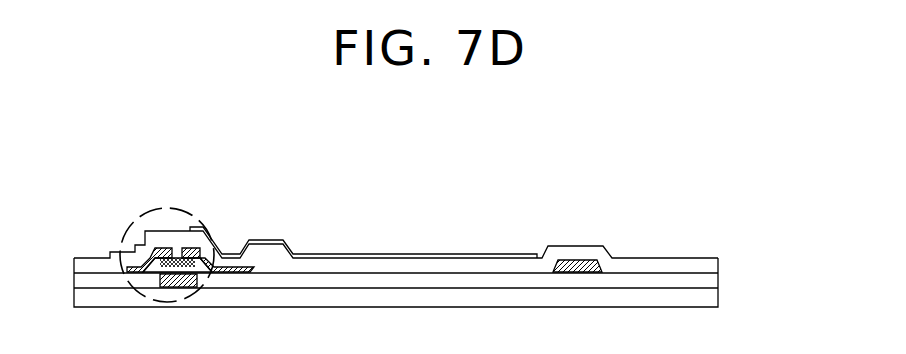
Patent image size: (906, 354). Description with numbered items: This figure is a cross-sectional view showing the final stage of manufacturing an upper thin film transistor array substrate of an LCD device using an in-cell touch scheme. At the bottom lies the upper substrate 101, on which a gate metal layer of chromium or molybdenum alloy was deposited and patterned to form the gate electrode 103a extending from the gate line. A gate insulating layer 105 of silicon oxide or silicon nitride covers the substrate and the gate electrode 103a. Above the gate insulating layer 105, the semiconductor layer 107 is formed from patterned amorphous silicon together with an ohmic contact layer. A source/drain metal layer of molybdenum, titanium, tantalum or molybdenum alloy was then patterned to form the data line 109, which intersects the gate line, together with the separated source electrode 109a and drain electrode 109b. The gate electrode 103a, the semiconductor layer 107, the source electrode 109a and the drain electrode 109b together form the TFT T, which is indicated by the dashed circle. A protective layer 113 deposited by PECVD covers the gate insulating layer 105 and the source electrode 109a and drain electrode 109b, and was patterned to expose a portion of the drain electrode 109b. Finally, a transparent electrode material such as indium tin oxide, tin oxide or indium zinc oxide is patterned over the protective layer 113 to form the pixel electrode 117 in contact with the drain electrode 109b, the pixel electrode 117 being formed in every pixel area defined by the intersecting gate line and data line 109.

The upper substrate 101 is at (713, 301).
The gate insulating layer 105 is at (713, 280).
The semiconductor layer 107 is at (197, 282).
The gate electrode 103a is at (173, 268).
The source electrode 109a is at (130, 270).
The drain electrode 109b is at (247, 272).
The data line 109 is at (577, 272).
The protective layer 113 is at (713, 265).
The pixel electrode 117 is at (335, 256).
The TFT T is at (175, 198).